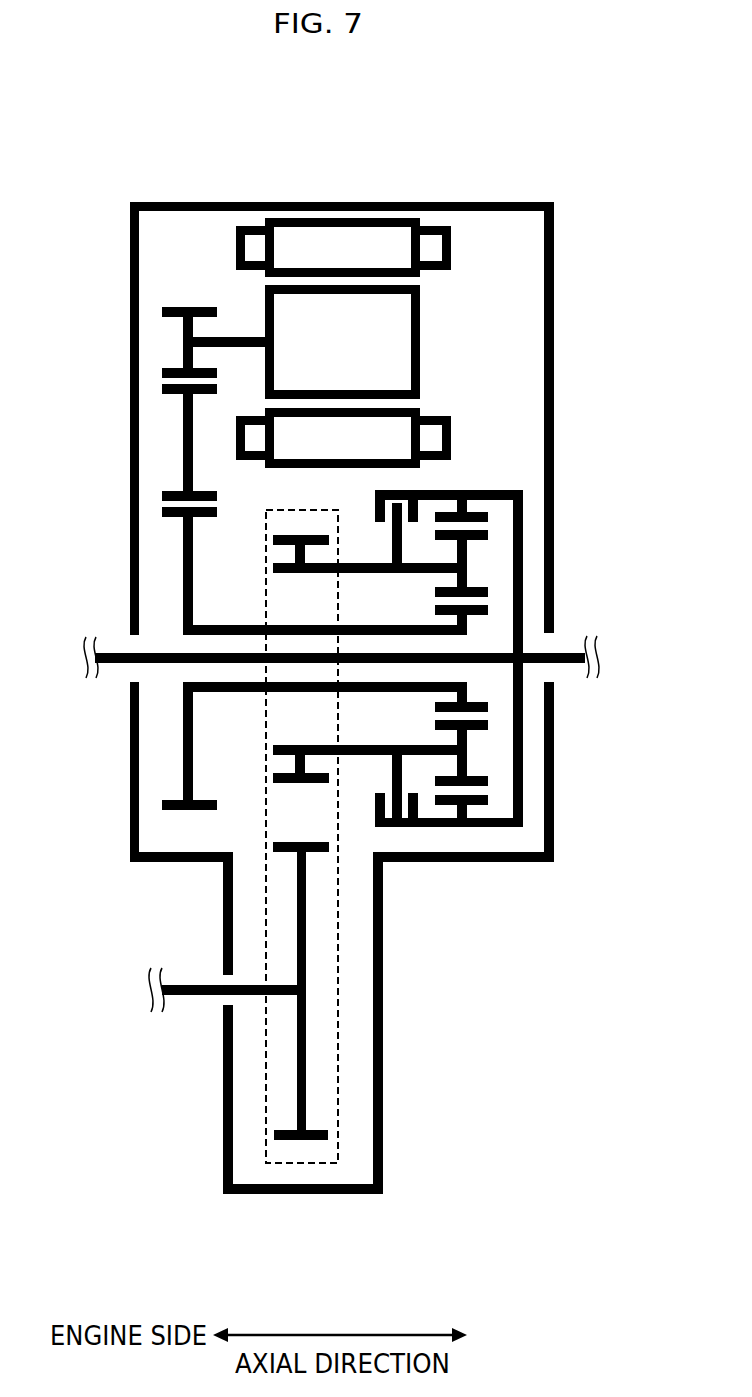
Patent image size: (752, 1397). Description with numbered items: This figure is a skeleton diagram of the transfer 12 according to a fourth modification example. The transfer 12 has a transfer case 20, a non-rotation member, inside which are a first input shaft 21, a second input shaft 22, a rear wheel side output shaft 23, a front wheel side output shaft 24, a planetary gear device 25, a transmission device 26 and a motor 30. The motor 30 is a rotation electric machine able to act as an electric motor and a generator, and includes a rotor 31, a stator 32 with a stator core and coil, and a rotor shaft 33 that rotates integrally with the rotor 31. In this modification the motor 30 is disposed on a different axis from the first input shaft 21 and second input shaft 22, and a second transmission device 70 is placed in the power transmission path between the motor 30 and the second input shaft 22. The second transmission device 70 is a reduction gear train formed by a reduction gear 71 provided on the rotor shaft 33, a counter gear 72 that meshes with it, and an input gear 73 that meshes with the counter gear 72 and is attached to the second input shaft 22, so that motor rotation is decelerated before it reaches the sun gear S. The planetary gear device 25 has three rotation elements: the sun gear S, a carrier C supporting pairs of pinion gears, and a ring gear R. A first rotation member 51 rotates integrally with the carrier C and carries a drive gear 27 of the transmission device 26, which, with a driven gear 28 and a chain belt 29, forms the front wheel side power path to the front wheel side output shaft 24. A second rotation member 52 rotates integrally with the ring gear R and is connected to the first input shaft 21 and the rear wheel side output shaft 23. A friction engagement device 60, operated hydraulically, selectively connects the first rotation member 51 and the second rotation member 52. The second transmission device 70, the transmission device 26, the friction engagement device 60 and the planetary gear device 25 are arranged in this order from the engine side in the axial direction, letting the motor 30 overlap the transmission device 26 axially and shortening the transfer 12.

The transfer 12 is at (221, 119).
The transfer case 20 is at (168, 202).
The first input shaft 21 is at (117, 667).
The second input shaft 22 is at (225, 625).
The rear wheel side output shaft 23 is at (566, 667).
The front wheel side output shaft 24 is at (183, 996).
The planetary gear device 25 is at (458, 831).
The transmission device 26 is at (287, 1169).
The drive gear 27 is at (287, 535).
The driven gear 28 is at (312, 1140).
The chain belt 29 is at (338, 1099).
The motor 30 is at (338, 200).
The rotor 31 is at (392, 342).
The stator 32 is at (392, 235).
The rotor shaft 33 is at (224, 337).
The first rotation member 51 is at (365, 563).
The second rotation member 52 is at (523, 565).
The friction engagement device 60 is at (395, 831).
The second transmission device 70 is at (187, 298).
The reduction gear 71 is at (173, 308).
The counter gear 72 is at (188, 436).
The input gear 73 is at (168, 520).
The ring gear R is at (477, 510).
The carrier C is at (433, 573).
The sun gear S is at (477, 617).